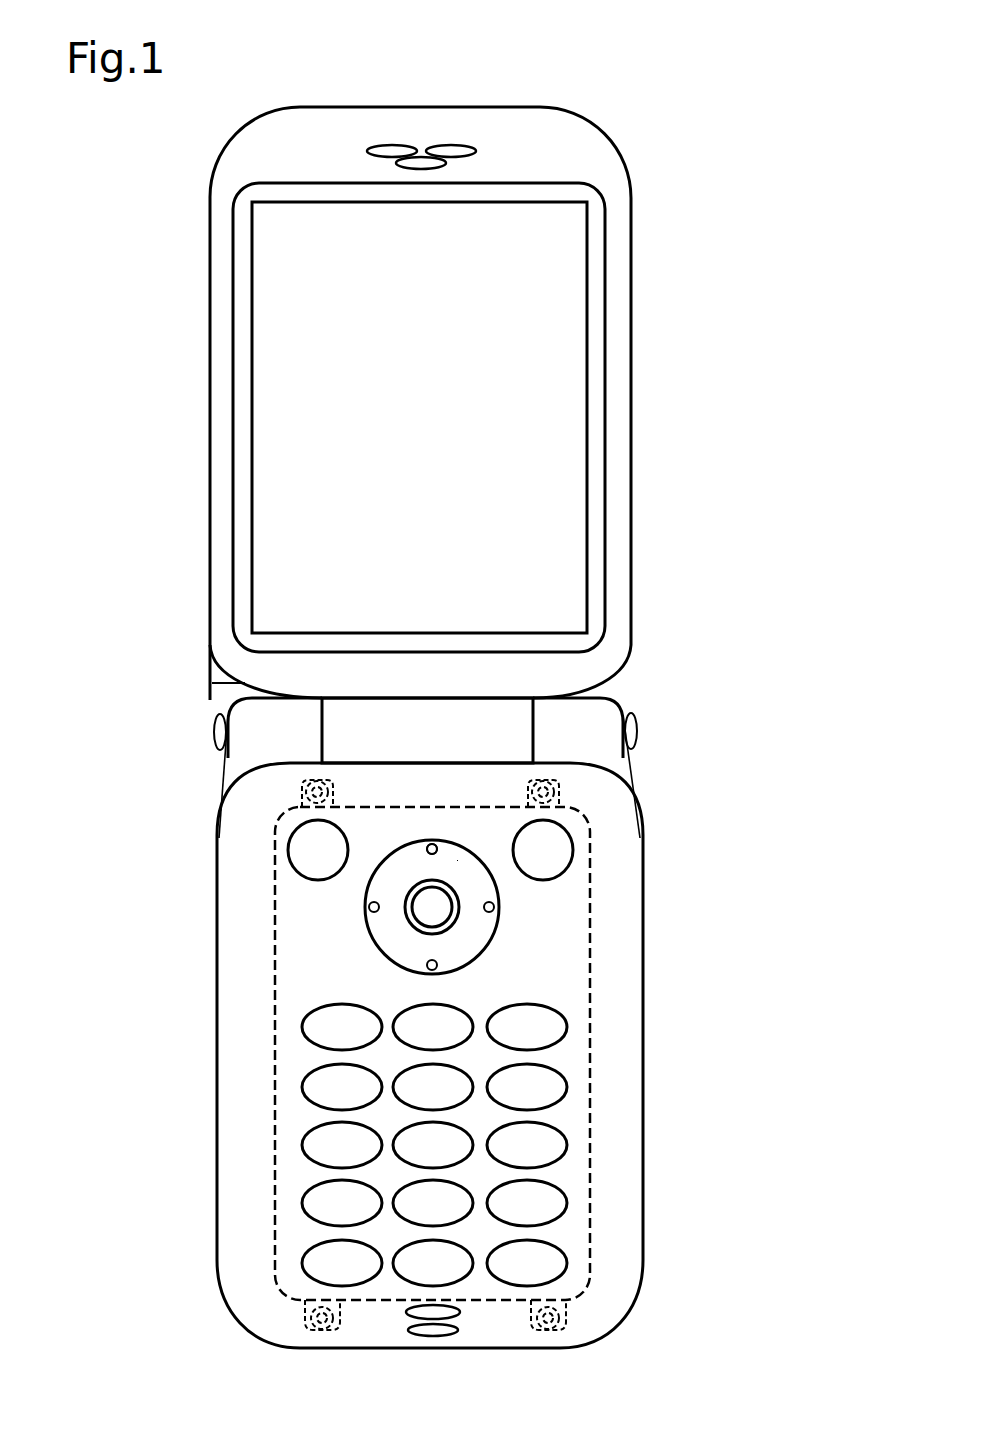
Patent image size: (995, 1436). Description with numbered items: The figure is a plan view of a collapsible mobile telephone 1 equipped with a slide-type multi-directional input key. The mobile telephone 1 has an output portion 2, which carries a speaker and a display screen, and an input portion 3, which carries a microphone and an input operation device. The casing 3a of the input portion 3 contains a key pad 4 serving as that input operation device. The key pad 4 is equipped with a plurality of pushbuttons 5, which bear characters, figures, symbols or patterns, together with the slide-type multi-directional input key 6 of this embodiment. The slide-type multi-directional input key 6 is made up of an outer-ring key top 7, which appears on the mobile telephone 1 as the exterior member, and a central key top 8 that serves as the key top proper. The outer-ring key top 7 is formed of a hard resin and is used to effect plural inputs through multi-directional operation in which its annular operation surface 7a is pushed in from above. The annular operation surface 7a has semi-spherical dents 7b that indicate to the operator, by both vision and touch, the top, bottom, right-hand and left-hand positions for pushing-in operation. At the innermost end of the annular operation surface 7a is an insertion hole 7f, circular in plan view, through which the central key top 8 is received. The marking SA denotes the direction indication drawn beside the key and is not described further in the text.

The collapsible mobile telephone 1 is at (646, 151).
The output portion 2 is at (210, 417).
The input portion 3 is at (217, 1040).
The casing 3a is at (253, 1145).
The key pad 4 is at (590, 1127).
The pushbuttons 5 is at (567, 1203).
The slide-type multi-directional input key 6 is at (488, 848).
The outer-ring key top 7 is at (497, 903).
The annular operation surface 7a is at (457, 860).
The semi-spherical dents 7b is at (431, 844).
The insertion hole 7f is at (418, 897).
The central key top 8 is at (415, 901).
The slide direction arrow SA is at (353, 922).